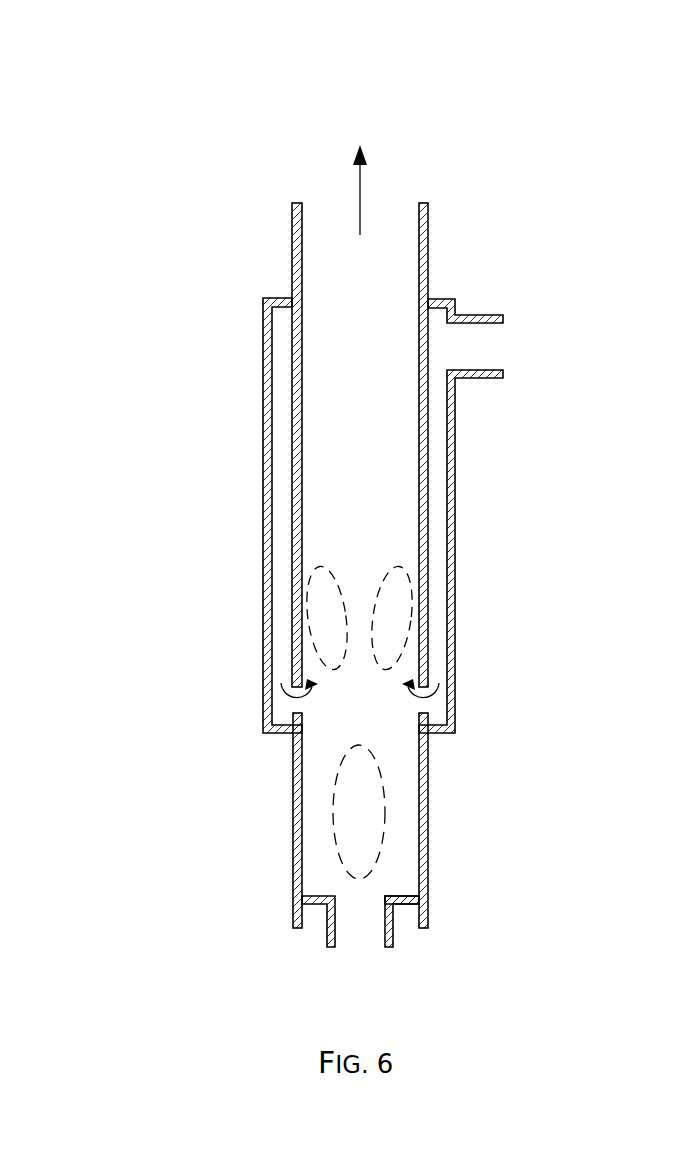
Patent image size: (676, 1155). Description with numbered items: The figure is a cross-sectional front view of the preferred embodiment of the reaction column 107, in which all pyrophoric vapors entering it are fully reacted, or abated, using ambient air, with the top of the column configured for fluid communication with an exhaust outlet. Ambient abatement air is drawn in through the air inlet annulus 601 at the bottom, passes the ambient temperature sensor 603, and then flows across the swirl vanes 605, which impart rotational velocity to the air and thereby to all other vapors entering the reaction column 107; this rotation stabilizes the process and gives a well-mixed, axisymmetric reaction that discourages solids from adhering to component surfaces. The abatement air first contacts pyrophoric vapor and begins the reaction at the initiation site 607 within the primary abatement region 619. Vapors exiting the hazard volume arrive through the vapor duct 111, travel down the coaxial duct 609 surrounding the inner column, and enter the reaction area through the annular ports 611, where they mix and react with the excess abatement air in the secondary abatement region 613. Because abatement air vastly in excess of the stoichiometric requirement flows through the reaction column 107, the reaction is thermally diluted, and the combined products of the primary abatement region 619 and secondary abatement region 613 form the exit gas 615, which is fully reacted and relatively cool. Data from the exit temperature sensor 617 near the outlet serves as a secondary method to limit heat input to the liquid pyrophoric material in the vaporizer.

The reaction column 107 is at (114, 100).
The vapor duct 111 is at (478, 315).
The air inlet annulus 601 is at (408, 922).
The ambient temperature sensor 603 is at (327, 938).
The swirl vanes 605 is at (412, 909).
The initiation site 607 is at (335, 836).
The coaxial duct 609 is at (293, 427).
The annular ports 611 is at (281, 684).
The secondary abatement region 613 is at (378, 568).
The exit gas 615 is at (358, 190).
The exit temperature sensor 617 is at (294, 247).
The primary abatement region 619 is at (335, 790).